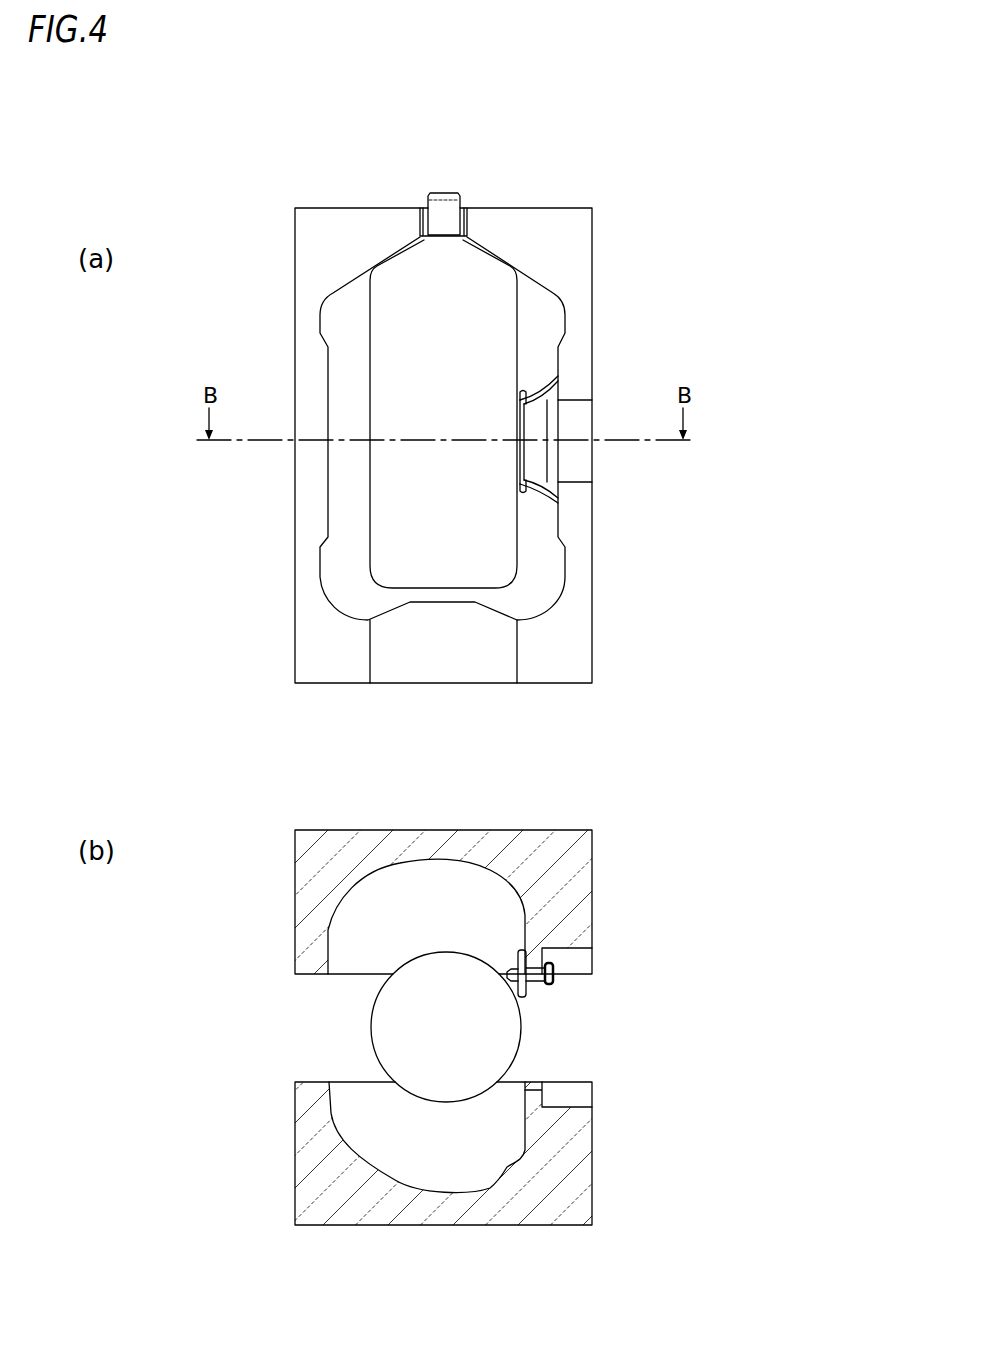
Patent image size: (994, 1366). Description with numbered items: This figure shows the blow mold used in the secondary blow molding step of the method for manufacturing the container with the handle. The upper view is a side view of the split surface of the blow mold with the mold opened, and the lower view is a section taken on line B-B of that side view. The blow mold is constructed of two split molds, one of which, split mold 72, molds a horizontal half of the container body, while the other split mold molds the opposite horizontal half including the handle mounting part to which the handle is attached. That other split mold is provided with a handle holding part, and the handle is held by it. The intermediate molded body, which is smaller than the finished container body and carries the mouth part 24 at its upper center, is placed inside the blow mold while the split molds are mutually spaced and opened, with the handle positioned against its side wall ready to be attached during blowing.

The mouth part 24 is at (441, 193).
The split mold 72 is at (593, 1180).